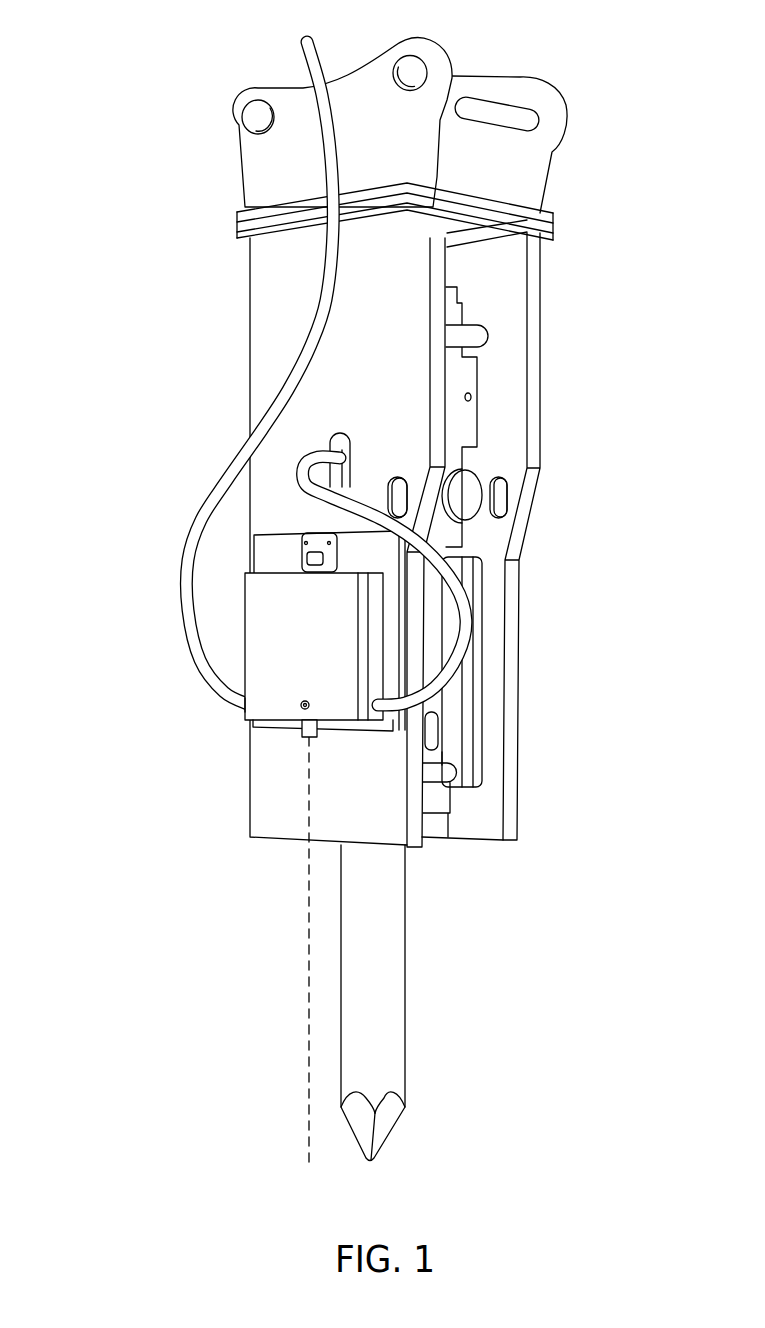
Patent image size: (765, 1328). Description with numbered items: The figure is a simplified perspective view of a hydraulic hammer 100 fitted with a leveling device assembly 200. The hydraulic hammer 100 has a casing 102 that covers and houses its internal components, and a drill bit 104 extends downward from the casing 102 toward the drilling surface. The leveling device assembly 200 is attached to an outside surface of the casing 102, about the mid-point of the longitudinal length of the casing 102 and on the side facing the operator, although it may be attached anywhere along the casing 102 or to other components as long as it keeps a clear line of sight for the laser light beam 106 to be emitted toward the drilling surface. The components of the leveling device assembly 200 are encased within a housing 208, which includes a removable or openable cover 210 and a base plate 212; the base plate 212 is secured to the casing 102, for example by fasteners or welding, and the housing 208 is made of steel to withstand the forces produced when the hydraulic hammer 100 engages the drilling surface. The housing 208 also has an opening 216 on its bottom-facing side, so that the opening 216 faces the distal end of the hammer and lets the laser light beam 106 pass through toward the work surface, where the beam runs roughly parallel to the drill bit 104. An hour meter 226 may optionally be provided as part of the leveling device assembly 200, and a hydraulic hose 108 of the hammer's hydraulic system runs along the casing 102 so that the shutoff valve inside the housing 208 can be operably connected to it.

The hydraulic hammer 100 is at (356, 584).
The casing 102 is at (247, 385).
The drill bit 104 is at (388, 1028).
The laser light beam 106 is at (309, 1003).
The hydraulic hose 108 is at (458, 637).
The leveling device assembly 200 is at (326, 444).
The housing 208 is at (258, 701).
The cover 210 is at (270, 635).
The base plate 212 is at (450, 757).
The opening 216 is at (306, 737).
The hour meter 226 is at (296, 540).